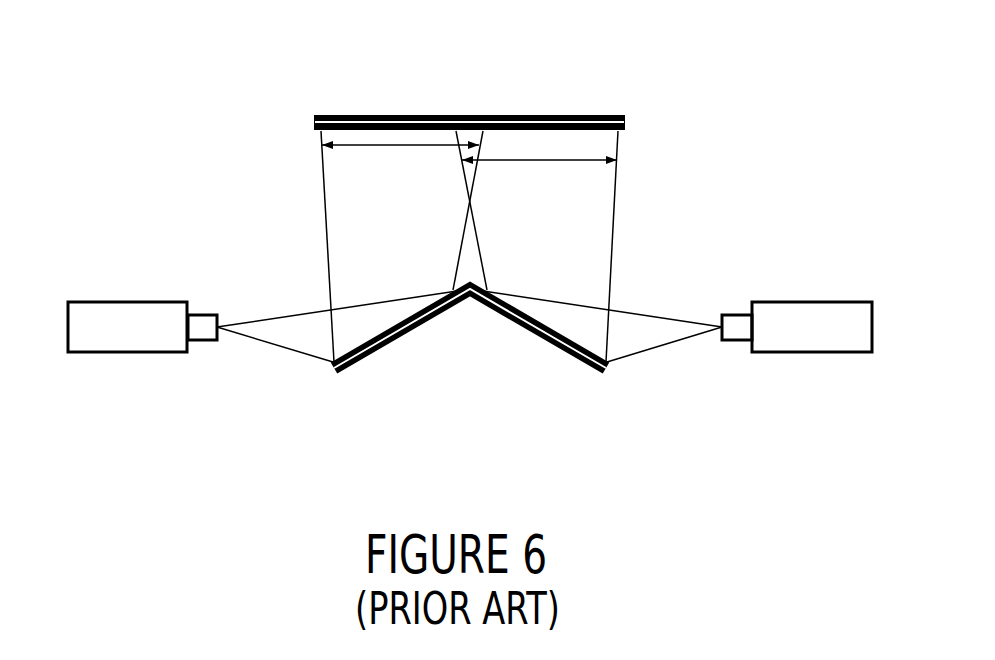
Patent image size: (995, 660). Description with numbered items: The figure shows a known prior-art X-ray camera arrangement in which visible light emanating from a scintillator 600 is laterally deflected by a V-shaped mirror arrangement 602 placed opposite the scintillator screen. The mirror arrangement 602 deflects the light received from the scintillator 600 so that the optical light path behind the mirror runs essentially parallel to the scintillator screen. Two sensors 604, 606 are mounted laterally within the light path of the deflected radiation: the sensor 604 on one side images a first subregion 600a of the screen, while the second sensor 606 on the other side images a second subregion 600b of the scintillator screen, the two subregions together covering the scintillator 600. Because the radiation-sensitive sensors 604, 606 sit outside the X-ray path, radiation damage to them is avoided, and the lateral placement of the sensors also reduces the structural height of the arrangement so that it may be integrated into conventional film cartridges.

The scintillator 600 is at (557, 116).
The first subregion 600a is at (397, 148).
The second subregion 600b is at (537, 160).
The V-shaped mirror arrangement 602 is at (563, 350).
The sensor 604 is at (140, 302).
The second sensor 606 is at (808, 302).